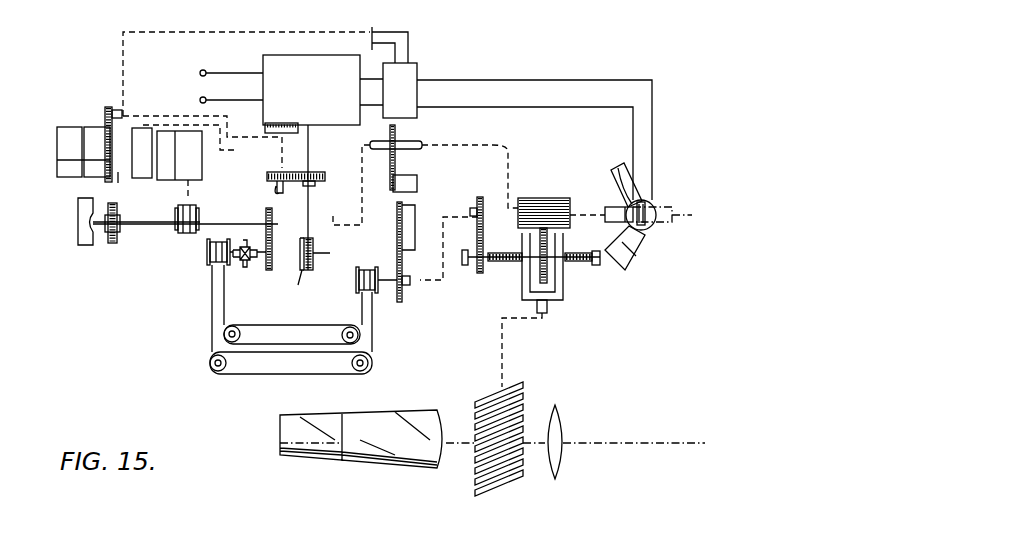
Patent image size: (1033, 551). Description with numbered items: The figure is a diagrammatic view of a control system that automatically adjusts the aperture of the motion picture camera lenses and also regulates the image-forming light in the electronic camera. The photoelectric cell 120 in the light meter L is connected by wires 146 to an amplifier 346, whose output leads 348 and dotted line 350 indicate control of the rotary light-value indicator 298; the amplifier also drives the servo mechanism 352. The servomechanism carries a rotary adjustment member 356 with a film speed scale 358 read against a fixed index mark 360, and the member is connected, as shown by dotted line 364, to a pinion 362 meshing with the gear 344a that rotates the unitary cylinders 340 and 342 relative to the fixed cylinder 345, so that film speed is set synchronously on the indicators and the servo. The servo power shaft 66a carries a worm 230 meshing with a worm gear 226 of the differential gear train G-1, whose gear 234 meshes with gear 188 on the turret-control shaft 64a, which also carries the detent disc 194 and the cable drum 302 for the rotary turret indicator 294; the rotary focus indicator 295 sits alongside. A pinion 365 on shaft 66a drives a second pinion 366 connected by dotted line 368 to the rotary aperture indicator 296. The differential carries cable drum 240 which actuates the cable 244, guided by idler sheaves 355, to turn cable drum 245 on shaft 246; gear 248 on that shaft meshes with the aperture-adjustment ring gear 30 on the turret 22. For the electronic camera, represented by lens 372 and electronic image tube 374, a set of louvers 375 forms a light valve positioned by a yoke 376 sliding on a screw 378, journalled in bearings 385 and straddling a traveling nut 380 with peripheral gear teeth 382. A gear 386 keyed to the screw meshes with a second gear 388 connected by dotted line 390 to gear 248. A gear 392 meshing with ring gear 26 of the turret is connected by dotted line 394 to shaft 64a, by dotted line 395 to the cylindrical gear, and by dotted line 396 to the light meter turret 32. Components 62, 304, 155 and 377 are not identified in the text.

The dotted line 350 is at (162, 32).
The output leads 348 is at (408, 35).
The amplifier 346 is at (417, 71).
The wires 146 is at (607, 110).
The pinion 362 is at (108, 106).
The second cylinder 342 is at (93, 127).
The fixed cylinder 345 is at (62, 143).
The gear 344a is at (62, 161).
The rotary light-value indicator 298 is at (84, 173).
The cylinder 340 is at (118, 183).
The rotary aperture indicator 296 is at (146, 172).
The rotary focus indicator 295 is at (201, 162).
The rotary turret indicator 294 is at (175, 166).
The dotted line 364 is at (177, 116).
The dotted line 368 is at (238, 151).
The servo mechanism 352 is at (274, 90).
The film speed scale 358 is at (268, 124).
The rotary adjustment member 356 is at (265, 129).
The fixed index mark 360 is at (292, 124).
The power shaft 66a is at (310, 158).
The pinion 365 is at (330, 170).
The second pinion 366 is at (289, 195).
The drive member 62 is at (78, 222).
The turret-control shaft 64a is at (137, 227).
The detent disc 194 is at (112, 245).
The cable drum 302 is at (190, 235).
The bearing 304 is at (198, 209).
The gear 188 is at (264, 214).
The gear 234 is at (268, 271).
The cable drum 240 is at (208, 262).
The differential gear train G-1 is at (244, 271).
The cable 244 is at (212, 319).
The idler sheaves 355 is at (342, 335).
The worm 230 is at (314, 264).
The worm gear 226 is at (298, 286).
The cable drum 245 is at (358, 275).
The shaft 246 is at (389, 278).
The gear 248 is at (403, 270).
The turret 22 is at (417, 184).
The aperture-adjustment ring gear 30 is at (415, 211).
The dotted line 390 is at (421, 283).
The gear 392 is at (396, 139).
The ring gear 26 is at (392, 188).
The dotted line 394 is at (347, 185).
The dotted line 395 is at (492, 143).
The gear 386 is at (480, 275).
The second gear 388 is at (480, 198).
The screw 378 is at (505, 262).
The bearings 385 is at (465, 266).
The yoke 376 is at (560, 297).
The peripheral gear teeth 382 is at (548, 237).
The traveling nut 380 is at (537, 198).
The dotted line 396 is at (585, 210).
The photoelectric cell 120 is at (662, 214).
The propeller 155 is at (619, 180).
The light meter L is at (660, 199).
The turret 32 is at (655, 233).
The connection 377 is at (502, 355).
The electronic image tube 374 is at (380, 446).
The louvers 375 is at (508, 472).
The lens 372 is at (561, 426).